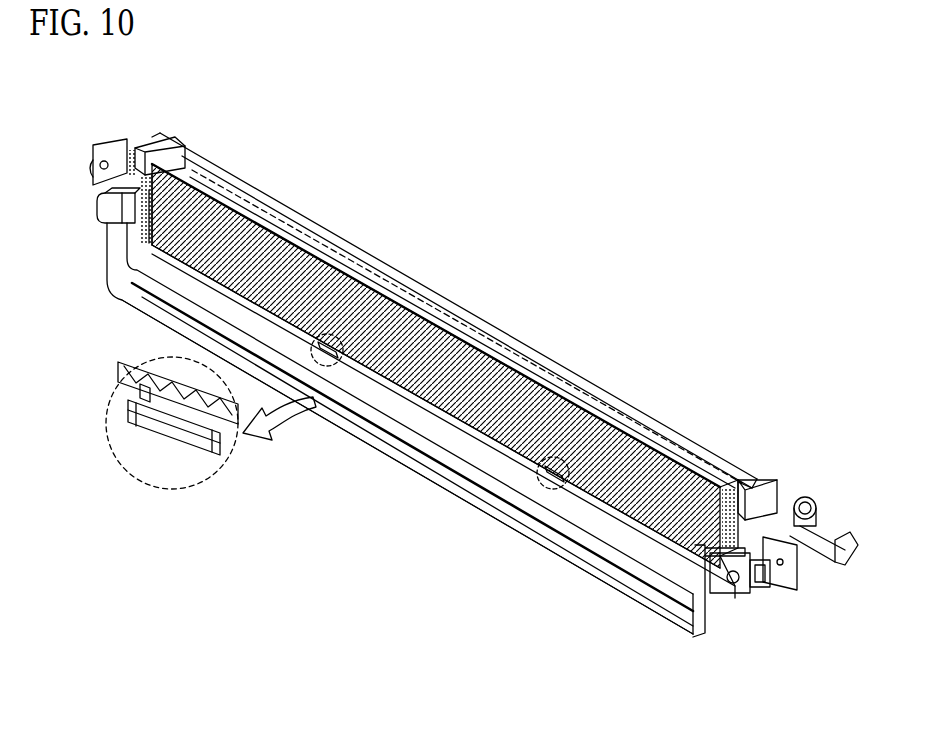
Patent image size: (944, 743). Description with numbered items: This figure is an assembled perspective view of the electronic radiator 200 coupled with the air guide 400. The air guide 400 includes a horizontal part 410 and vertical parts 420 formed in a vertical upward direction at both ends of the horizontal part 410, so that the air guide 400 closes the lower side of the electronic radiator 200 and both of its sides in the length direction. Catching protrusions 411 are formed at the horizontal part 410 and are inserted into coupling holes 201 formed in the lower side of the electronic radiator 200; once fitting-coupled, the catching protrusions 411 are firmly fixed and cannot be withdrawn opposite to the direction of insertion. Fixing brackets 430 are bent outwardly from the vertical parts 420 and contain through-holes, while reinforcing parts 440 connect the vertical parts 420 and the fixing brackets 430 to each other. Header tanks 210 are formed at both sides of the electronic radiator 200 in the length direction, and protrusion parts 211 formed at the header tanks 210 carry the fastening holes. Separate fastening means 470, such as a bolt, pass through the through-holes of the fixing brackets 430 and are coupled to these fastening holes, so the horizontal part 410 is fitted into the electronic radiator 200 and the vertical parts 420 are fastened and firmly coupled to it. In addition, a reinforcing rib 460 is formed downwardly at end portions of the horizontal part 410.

The electronic radiator 200 is at (448, 272).
The coupling holes 201 is at (540, 377).
The header tanks 210 is at (160, 142).
The protrusion parts 211 is at (780, 590).
The air guide 400 is at (380, 476).
The horizontal part 410 is at (470, 470).
The catching protrusions 411 is at (217, 467).
The vertical parts 420 is at (190, 177).
The fixing brackets 430 is at (762, 608).
The reinforcing parts 440 is at (720, 607).
The reinforcing rib 460 is at (577, 565).
The fastening means 470 is at (745, 600).